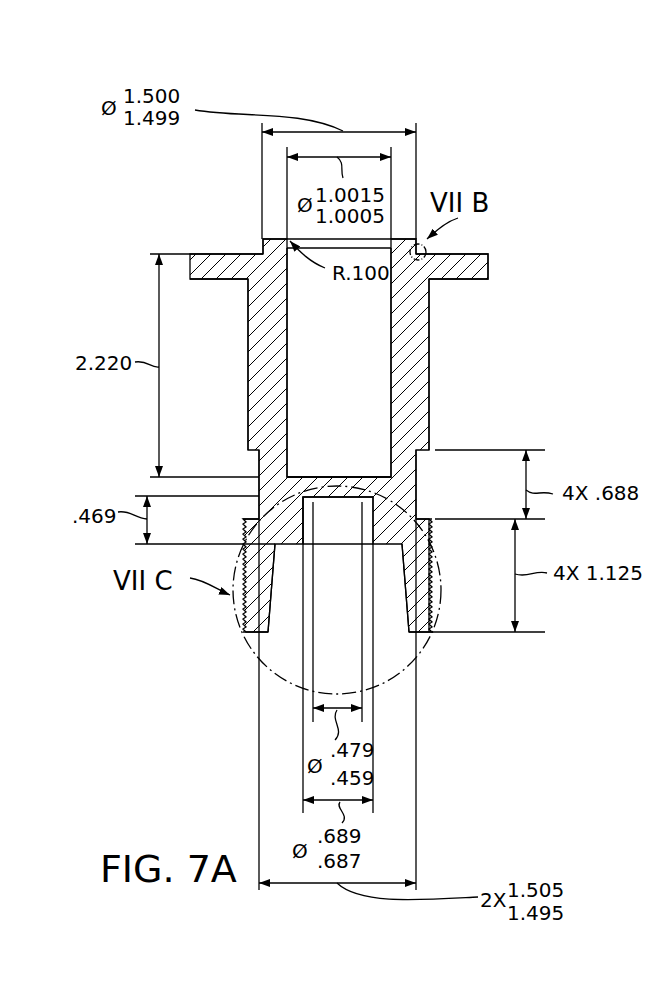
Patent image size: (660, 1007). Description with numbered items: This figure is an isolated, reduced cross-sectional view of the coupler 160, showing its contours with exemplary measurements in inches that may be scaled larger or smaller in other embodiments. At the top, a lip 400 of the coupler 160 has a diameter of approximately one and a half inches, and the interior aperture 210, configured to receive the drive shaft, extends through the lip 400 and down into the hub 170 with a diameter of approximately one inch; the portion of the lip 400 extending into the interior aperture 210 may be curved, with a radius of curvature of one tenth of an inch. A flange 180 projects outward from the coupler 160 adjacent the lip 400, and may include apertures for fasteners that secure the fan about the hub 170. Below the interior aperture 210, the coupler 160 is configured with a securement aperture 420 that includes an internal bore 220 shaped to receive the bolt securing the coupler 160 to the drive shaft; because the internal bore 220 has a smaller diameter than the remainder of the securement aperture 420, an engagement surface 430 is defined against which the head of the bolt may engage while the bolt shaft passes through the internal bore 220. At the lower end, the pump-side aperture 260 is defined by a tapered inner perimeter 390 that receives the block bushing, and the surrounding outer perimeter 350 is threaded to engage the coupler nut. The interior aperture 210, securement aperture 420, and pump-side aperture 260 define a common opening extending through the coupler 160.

The coupler 160 is at (466, 135).
The hub 170 is at (429, 385).
The flange 180 is at (455, 280).
The interior aperture 210 is at (305, 373).
The internal bore 220 is at (320, 473).
The pump-side aperture 260 is at (330, 615).
The outer perimeter 350 is at (432, 572).
The inner perimeter 390 is at (396, 630).
The lip 400 is at (262, 244).
The securement aperture 420 is at (339, 500).
The engagement surface 430 is at (312, 504).